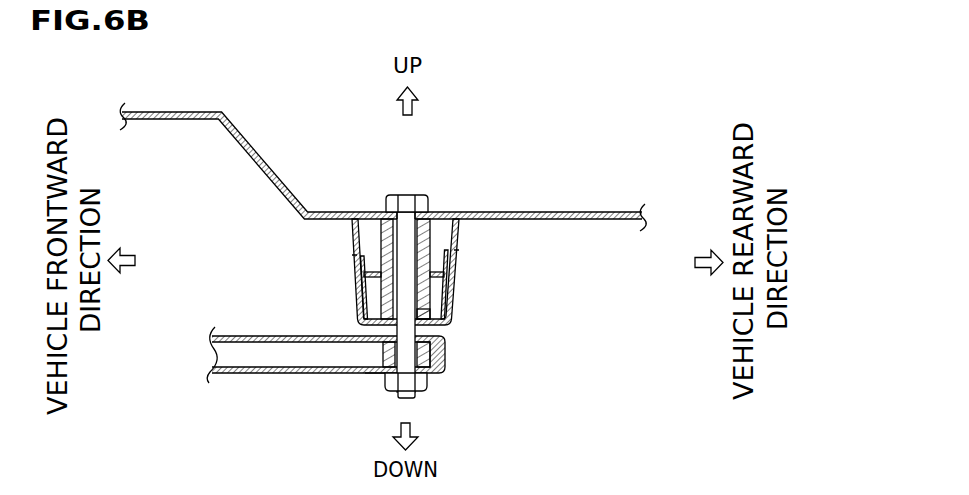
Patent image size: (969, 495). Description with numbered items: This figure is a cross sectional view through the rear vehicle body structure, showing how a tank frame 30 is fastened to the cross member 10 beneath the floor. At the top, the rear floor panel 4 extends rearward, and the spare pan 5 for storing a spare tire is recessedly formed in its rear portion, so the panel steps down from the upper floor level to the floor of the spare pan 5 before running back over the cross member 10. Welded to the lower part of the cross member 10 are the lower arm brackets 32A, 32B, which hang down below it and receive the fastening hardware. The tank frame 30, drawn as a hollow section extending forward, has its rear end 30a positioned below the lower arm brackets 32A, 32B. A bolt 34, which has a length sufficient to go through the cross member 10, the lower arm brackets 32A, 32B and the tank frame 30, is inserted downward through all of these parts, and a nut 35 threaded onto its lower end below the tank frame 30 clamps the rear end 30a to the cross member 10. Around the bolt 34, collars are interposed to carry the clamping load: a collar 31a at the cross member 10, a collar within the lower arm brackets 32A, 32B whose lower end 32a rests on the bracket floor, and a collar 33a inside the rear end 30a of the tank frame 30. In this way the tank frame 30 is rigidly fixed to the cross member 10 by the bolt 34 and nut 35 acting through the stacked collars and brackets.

The spare pan 5 is at (383, 167).
The rear floor panel 4 is at (250, 143).
The cross member 10 is at (460, 230).
The tank frame 30 is at (278, 376).
The rear end of tank frame 30a is at (377, 381).
The collar 31a is at (445, 213).
The lower arm bracket 32A is at (432, 294).
The lower end of collar 32a is at (442, 318).
The lower arm bracket 32B is at (356, 303).
The collar 33a is at (445, 355).
The bolt 34 is at (408, 228).
The nut 35 is at (430, 382).